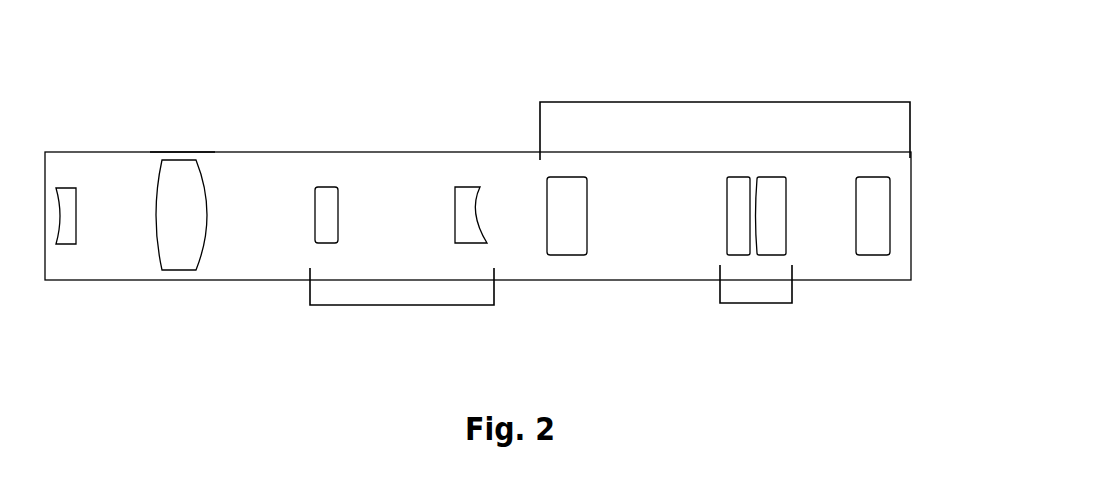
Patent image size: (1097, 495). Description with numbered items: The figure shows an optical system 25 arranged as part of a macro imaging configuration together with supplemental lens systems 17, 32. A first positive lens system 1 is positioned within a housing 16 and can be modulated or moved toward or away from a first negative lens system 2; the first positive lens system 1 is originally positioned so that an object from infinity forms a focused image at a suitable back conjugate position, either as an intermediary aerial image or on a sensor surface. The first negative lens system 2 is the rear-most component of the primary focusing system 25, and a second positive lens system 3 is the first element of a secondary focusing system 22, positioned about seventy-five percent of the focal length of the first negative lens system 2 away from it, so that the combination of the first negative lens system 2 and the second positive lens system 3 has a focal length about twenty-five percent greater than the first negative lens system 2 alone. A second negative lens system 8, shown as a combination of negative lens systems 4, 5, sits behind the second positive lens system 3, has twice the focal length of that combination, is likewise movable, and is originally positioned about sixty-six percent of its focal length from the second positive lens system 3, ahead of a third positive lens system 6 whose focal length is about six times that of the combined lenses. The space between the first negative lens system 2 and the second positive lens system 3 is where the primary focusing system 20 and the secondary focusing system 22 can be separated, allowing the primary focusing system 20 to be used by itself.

The first positive lens system 1 is at (327, 203).
The first negative lens system 2 is at (465, 200).
The second positive lens system 3 is at (570, 208).
The negative lens system 4 is at (773, 182).
The negative lens system 5 is at (737, 175).
The third positive lens system 6 is at (882, 192).
The second negative lens system 8 is at (757, 303).
The housing 16 is at (178, 152).
The supplemental lens system 17 is at (182, 203).
The primary focusing system 20 is at (402, 305).
The secondary focusing system 22 is at (729, 102).
The optical system 25 is at (414, 92).
The supplemental lens system 32 is at (68, 212).